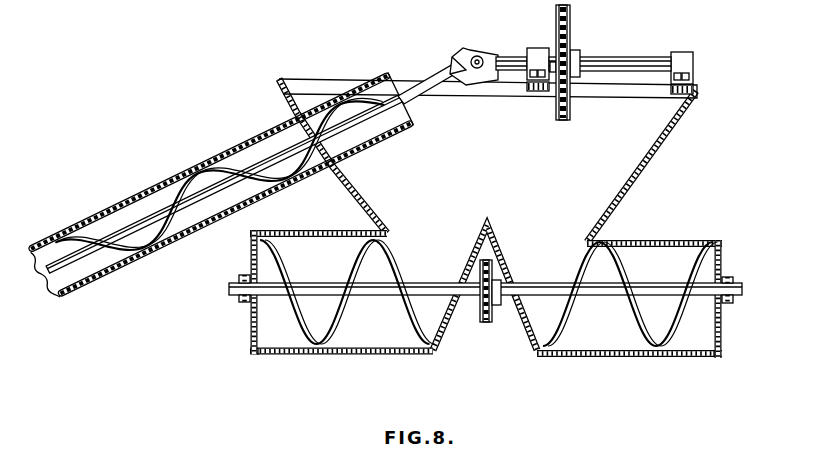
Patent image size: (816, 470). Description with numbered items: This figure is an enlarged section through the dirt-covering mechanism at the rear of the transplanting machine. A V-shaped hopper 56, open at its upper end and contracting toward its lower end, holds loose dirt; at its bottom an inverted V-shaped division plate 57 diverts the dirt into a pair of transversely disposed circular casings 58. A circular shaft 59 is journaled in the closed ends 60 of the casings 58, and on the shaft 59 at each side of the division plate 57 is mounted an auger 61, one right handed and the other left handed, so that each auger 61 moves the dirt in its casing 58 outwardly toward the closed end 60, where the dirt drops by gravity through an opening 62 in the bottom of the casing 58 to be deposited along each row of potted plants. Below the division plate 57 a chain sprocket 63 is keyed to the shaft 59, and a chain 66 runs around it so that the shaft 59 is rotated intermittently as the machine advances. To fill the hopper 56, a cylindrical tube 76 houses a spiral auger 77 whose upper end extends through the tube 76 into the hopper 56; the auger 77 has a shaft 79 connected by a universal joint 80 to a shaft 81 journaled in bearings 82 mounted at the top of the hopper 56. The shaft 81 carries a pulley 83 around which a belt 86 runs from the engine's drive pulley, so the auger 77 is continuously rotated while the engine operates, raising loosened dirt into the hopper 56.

The hopper 56 is at (644, 177).
The division plate 57 is at (500, 256).
The circular casing 58 is at (596, 354).
The shaft 59 is at (420, 283).
The closed end 60 is at (726, 270).
The auger 61 is at (607, 269).
The opening 62 is at (686, 358).
The chain sprocket 63 is at (477, 304).
The chain 66 is at (488, 322).
The cylindrical tube 76 is at (118, 203).
The spiral auger 77 is at (190, 185).
The shaft 79 is at (422, 94).
The universal joint 80 is at (464, 50).
The shaft 81 is at (615, 60).
The bearing 82 is at (686, 52).
The pulley 83 is at (571, 26).
The belt 86 is at (573, 46).